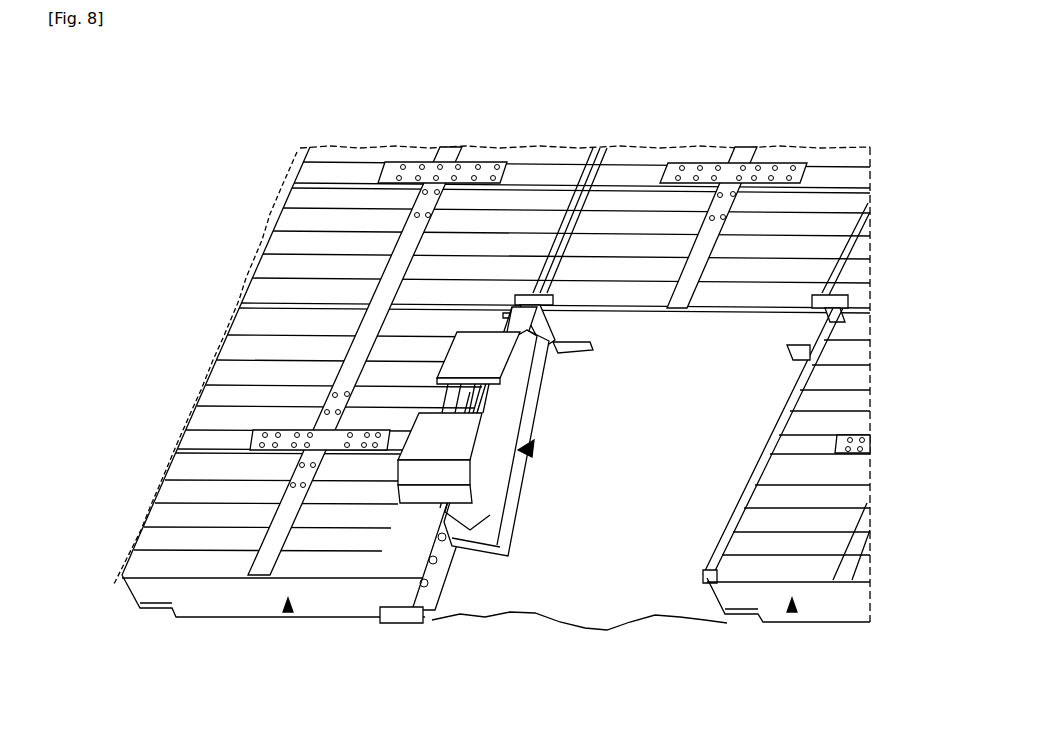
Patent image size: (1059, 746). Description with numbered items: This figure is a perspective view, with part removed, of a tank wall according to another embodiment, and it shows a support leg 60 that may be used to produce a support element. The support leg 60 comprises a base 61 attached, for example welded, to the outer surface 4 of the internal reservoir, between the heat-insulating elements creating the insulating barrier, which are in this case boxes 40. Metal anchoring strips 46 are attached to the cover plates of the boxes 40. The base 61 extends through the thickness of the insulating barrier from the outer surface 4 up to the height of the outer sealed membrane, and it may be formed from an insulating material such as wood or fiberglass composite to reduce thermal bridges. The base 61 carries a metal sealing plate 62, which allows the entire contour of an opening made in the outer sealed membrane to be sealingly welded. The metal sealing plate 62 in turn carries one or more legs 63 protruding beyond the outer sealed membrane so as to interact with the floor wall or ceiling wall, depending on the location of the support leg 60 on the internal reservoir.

The outer surface 4 is at (627, 602).
The boxes 40 is at (287, 613).
The metal anchoring strips 46 is at (267, 429).
The support leg 60 is at (536, 447).
The base 61 is at (500, 483).
The metal sealing plate 62 is at (410, 600).
The legs 63 is at (485, 352).